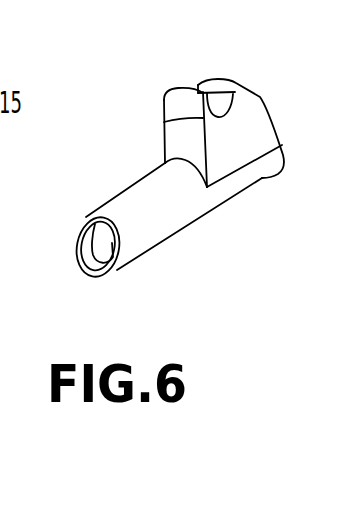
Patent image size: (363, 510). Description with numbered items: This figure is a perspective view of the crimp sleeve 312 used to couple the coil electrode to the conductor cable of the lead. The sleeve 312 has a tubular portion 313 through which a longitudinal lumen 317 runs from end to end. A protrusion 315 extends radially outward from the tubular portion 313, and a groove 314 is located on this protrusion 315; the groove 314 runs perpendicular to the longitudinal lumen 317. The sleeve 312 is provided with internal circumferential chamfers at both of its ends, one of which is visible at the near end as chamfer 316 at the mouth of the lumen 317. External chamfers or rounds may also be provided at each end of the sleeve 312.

The sleeve 312 is at (195, 191).
The tubular portion 313 is at (120, 215).
The groove 314 is at (227, 102).
The protrusion 315 is at (261, 124).
The internal circumferential chamfer 316 is at (92, 262).
The longitudinal lumen 317 is at (106, 266).